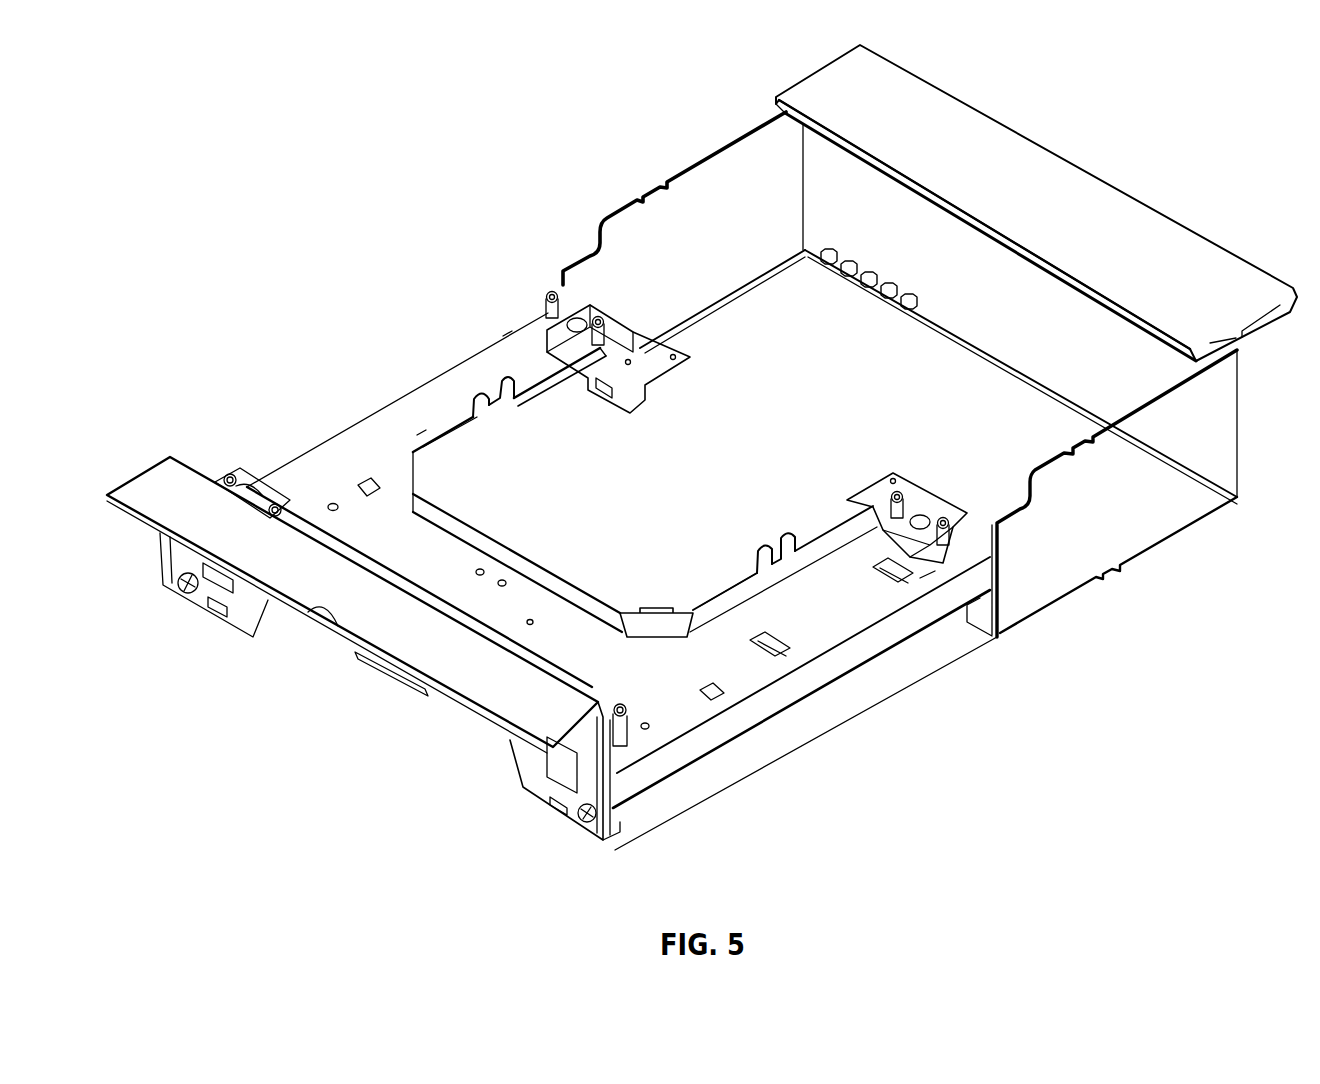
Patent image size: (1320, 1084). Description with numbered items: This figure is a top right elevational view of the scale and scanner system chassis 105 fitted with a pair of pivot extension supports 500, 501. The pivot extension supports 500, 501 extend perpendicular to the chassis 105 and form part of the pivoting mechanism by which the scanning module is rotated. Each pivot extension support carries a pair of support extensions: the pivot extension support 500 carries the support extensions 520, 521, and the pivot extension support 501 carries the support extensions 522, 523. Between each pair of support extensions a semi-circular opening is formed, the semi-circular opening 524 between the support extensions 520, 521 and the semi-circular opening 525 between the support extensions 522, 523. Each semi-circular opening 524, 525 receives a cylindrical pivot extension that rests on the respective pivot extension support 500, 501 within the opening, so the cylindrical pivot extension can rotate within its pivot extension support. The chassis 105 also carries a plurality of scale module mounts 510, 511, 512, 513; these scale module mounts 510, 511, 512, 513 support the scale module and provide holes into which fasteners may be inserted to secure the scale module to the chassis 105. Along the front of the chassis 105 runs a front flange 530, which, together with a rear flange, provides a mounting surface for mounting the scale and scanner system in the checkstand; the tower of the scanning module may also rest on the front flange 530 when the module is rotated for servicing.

The chassis 105 is at (705, 843).
The pivot extension support 500 is at (752, 557).
The pivot extension support 501 is at (480, 400).
The scale module mount 510 is at (245, 487).
The scale module mount 511 is at (592, 310).
The scale module mount 512 is at (605, 697).
The scale module mount 513 is at (920, 514).
The support extension 520 is at (750, 562).
The support extension 521 is at (797, 548).
The support extension 522 is at (470, 402).
The support extension 523 is at (513, 392).
The semi-circular opening 524 is at (773, 543).
The semi-circular opening 525 is at (507, 380).
The front flange 530 is at (1067, 175).